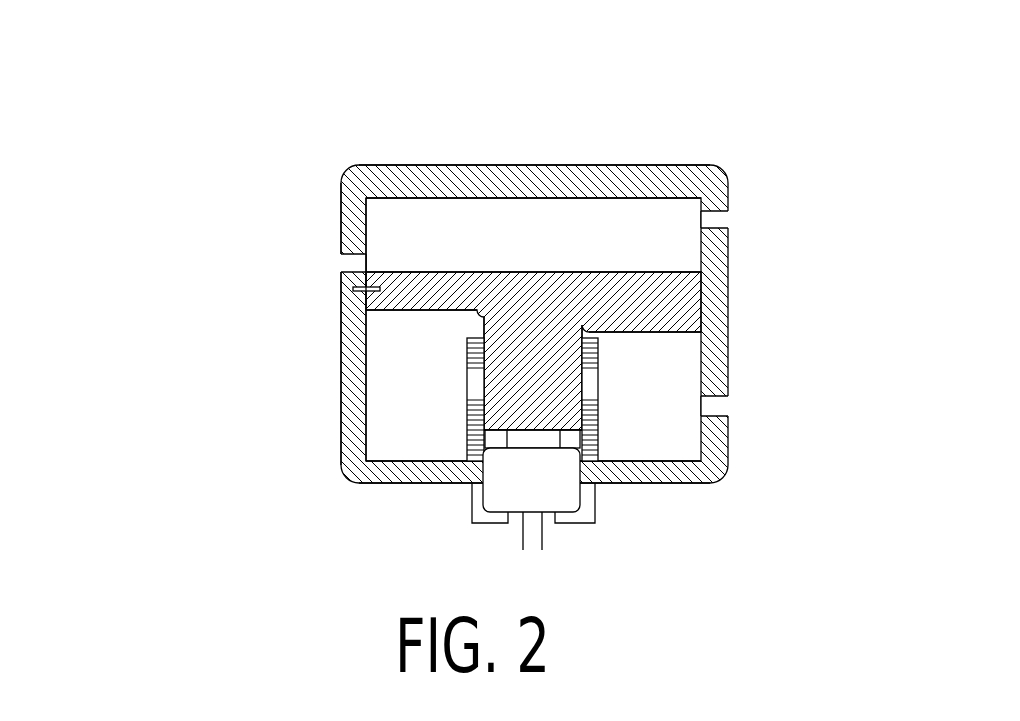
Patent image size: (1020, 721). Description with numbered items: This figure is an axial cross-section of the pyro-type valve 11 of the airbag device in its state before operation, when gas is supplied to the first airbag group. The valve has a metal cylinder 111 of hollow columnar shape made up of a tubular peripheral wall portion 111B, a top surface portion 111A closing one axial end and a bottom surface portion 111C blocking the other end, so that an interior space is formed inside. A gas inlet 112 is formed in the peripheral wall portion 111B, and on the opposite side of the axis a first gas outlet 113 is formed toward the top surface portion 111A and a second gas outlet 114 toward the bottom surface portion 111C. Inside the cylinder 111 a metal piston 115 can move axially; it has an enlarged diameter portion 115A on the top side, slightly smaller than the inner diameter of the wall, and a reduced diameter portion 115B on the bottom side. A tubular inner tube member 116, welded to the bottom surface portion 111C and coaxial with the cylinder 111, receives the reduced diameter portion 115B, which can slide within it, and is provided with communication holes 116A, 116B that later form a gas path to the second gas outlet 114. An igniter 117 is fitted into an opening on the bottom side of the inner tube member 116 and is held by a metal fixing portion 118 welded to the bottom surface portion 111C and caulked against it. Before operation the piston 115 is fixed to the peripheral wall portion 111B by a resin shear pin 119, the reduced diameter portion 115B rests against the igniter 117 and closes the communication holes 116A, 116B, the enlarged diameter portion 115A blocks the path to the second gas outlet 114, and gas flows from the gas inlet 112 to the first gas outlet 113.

The pyro-type valve 11 is at (783, 92).
The cylinder 111 is at (120, 280).
The top surface portion 111A is at (398, 165).
The peripheral wall portion 111B is at (338, 321).
The bottom surface portion 111C is at (394, 485).
The gas inlet 112 is at (348, 264).
The first gas outlet 113 is at (716, 221).
The second gas outlet 114 is at (716, 405).
The piston 115 is at (820, 265).
The enlarged diameter portion 115A is at (637, 305).
The reduced diameter portion 115B is at (566, 362).
The inner tube member 116 is at (477, 426).
The communication hole 116A is at (477, 380).
The communication hole 116B is at (592, 377).
The igniter 117 is at (523, 485).
The fixing portion 118 is at (472, 508).
The shear pin 119 is at (368, 289).